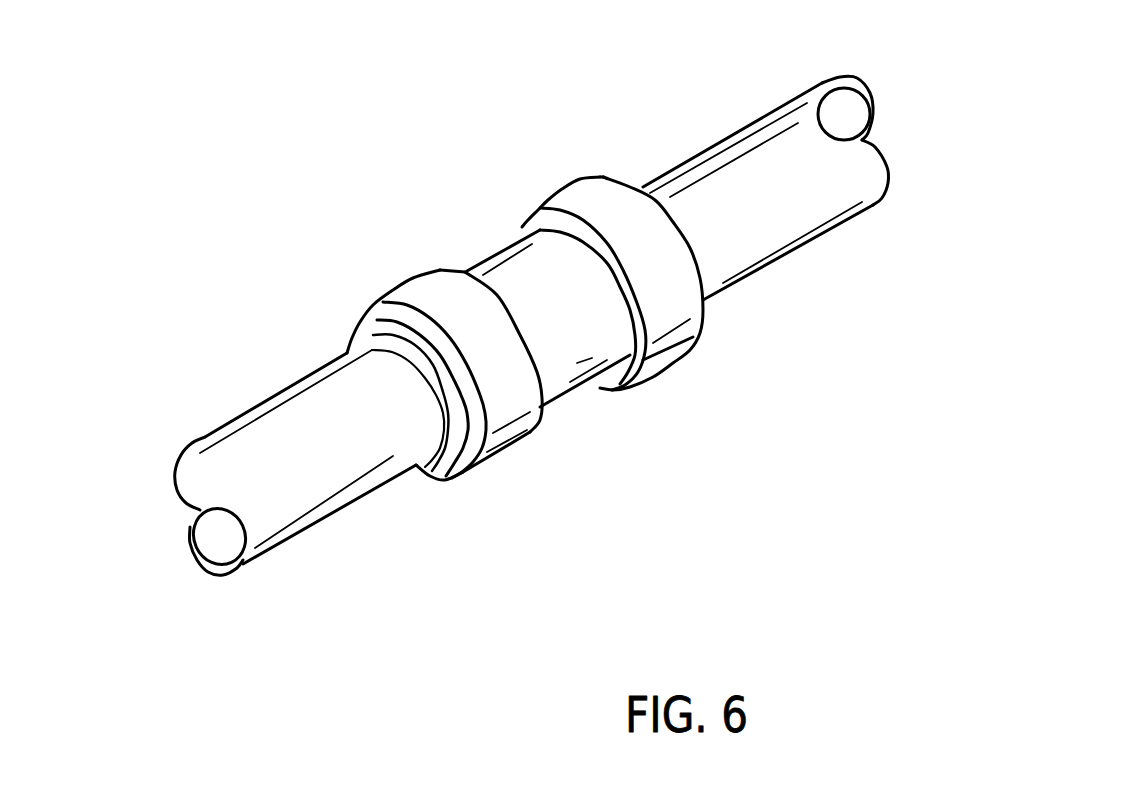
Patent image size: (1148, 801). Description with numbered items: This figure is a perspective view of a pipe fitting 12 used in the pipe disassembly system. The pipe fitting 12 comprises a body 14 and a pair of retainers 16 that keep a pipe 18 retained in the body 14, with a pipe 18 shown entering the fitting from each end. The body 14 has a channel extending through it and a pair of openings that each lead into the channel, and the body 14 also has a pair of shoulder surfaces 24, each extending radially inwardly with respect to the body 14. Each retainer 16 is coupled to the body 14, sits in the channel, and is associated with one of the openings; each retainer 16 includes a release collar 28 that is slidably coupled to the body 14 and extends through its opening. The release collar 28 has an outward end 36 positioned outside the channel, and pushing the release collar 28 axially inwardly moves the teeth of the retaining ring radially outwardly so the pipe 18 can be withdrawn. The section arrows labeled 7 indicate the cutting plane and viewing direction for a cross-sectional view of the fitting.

The pipe fitting 12 is at (563, 277).
The body 14 is at (512, 266).
The retainer 16 is at (472, 508).
The pipe 18 is at (797, 230).
The shoulder surface 24 is at (450, 267).
The release collar 28 is at (377, 330).
The outward end 36 is at (445, 440).
The section line 7- 7 is at (500, 297).